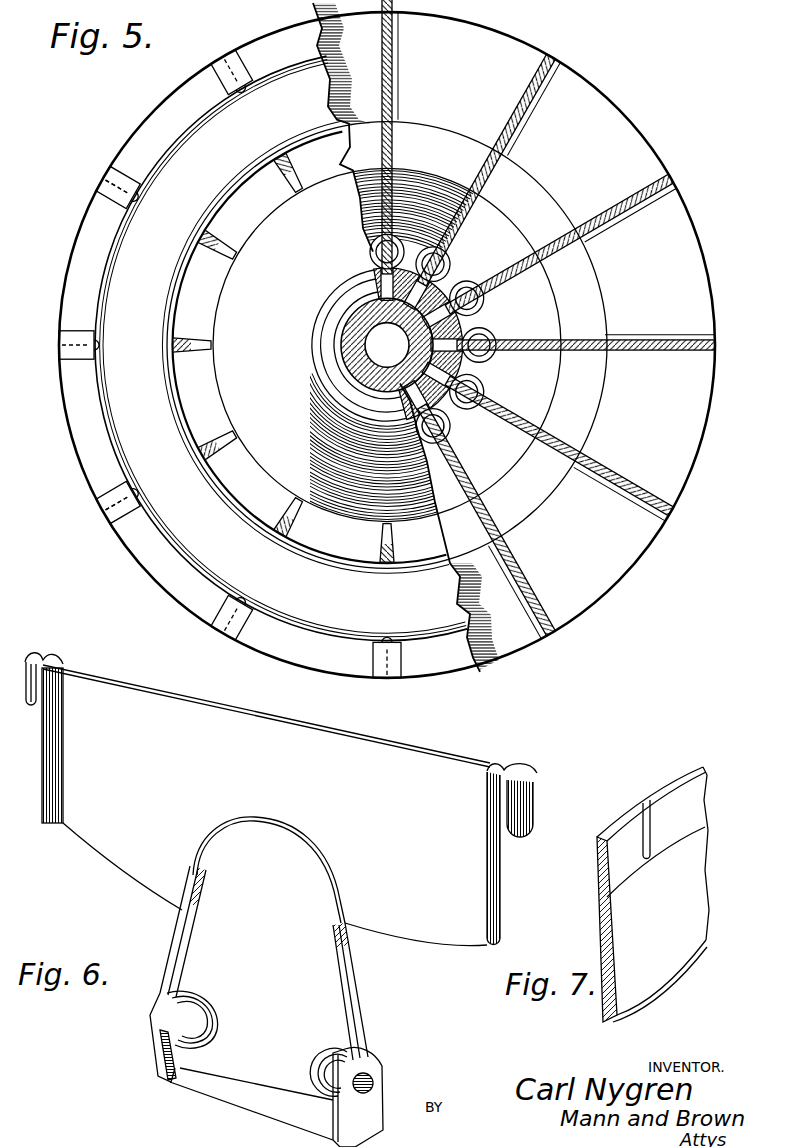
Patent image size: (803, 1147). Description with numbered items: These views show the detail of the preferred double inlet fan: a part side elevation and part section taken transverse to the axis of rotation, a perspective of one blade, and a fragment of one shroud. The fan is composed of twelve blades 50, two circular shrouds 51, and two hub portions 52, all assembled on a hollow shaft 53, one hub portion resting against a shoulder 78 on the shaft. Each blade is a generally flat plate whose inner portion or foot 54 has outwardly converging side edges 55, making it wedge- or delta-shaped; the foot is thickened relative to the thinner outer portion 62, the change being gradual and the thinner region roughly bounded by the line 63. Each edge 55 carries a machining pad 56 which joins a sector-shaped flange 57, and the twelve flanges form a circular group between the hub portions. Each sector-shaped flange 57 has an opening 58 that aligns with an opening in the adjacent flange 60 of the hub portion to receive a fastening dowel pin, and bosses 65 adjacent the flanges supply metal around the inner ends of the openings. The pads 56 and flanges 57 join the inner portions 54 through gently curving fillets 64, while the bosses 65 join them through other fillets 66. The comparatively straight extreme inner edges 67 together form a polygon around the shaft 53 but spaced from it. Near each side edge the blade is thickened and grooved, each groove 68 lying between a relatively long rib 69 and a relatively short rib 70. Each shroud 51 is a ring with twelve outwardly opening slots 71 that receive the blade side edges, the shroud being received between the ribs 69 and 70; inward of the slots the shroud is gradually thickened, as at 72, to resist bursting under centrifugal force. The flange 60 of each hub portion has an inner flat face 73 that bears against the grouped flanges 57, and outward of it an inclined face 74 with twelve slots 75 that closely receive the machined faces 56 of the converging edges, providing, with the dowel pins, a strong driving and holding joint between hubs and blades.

In FIG. 5, the blade 50 is at (517, 138).
In FIG. 6, the blade 50 is at (291, 866).
In FIG. 5, the circular shroud 51 is at (125, 418).
In FIG. 7, the circular shroud 51 is at (658, 917).
In FIG. 5, the hub portion 52 is at (345, 288).
In FIG. 5, the hollow shaft 53 is at (360, 318).
In FIG. 6, the inner portion or foot 54 is at (269, 929).
In FIG. 6, the converging side edge 55 is at (185, 957).
In FIG. 6, the machining pad 56 is at (182, 927).
In FIG. 5, the sector-shaped flange 57 is at (480, 338).
In FIG. 6, the sector-shaped flange 57 is at (160, 1058).
In FIG. 5, the opening 58 is at (455, 415).
In FIG. 6, the opening 58 is at (372, 1083).
In FIG. 5, the hub flange 60 is at (232, 293).
In FIG. 6, the outer portion 62 is at (180, 720).
In FIG. 6, the boundary line 63 is at (250, 818).
In FIG. 6, the fillet 64 is at (183, 950).
In FIG. 5, the boss 65 is at (487, 368).
In FIG. 6, the boss 65 is at (317, 1067).
In FIG. 6, the fillet 66 is at (313, 1047).
In FIG. 6, the extreme inner edge 67 is at (255, 1110).
In FIG. 6, the groove 68 is at (50, 655).
In FIG. 5, the long rib 69 is at (648, 176).
In FIG. 6, the long rib 69 is at (58, 660).
In FIG. 5, the short rib 70 is at (110, 185).
In FIG. 6, the short rib 70 is at (42, 657).
In FIG. 5, the slot 71 is at (128, 192).
In FIG. 7, the slot 71 is at (640, 800).
In FIG. 7, the thickened portion 72 is at (700, 905).
In FIG. 5, the inner flat face 73 is at (484, 315).
In FIG. 5, the inclined face 74 is at (505, 240).
In FIG. 5, the slot 75 is at (558, 335).
In FIG. 5, the shoulder 78 is at (333, 337).